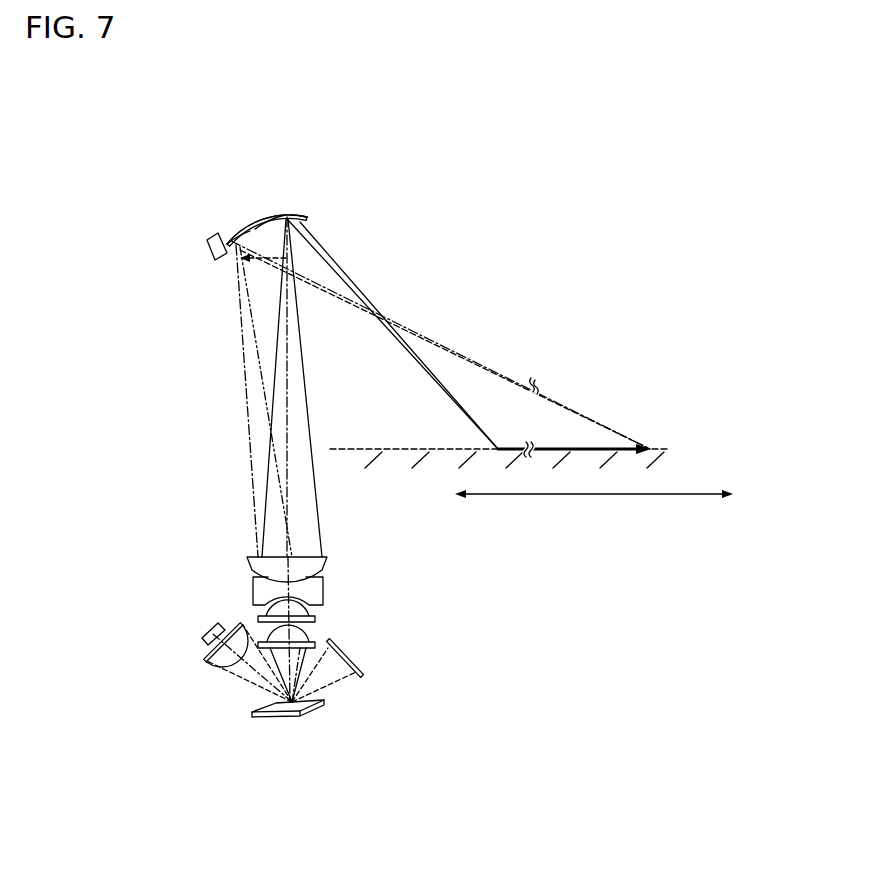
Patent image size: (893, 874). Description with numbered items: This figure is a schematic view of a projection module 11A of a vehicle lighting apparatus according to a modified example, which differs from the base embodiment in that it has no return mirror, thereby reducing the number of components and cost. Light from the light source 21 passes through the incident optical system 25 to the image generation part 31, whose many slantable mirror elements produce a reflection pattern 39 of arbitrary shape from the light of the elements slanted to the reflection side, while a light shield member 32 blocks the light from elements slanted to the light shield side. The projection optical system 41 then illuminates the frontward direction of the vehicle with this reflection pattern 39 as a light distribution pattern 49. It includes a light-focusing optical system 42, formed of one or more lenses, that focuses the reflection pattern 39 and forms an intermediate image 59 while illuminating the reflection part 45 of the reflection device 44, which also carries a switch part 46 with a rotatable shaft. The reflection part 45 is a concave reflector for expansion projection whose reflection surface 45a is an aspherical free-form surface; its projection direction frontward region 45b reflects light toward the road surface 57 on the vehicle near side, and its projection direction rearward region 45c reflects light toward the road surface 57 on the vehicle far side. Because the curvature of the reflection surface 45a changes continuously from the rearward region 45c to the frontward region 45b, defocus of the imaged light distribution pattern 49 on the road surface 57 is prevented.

The projection module 11A is at (427, 198).
The light source 21 is at (205, 633).
The incident optical system 25 is at (210, 666).
The image generation part 31 is at (291, 717).
The light shield member 32 is at (345, 654).
The reflection pattern 39 is at (300, 699).
The projection optical system 41 is at (214, 458).
The light-focusing optical system 42 is at (340, 590).
The reflection device 44 is at (276, 205).
The reflection part 45 is at (263, 227).
The reflection surface 45a is at (266, 224).
The projection direction frontward region 45b is at (306, 225).
The projection direction rearward region 45c is at (238, 250).
The switch part 46 is at (209, 252).
The light distribution pattern 49 is at (593, 448).
The road surface 57 is at (400, 448).
The intermediate image 59 is at (263, 261).